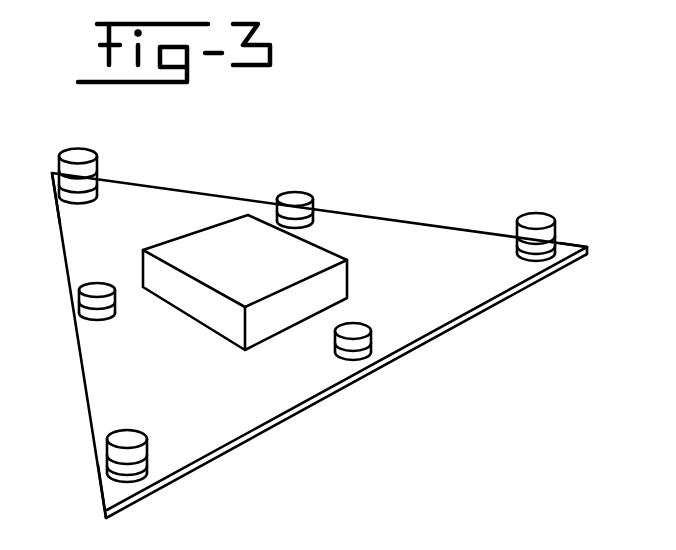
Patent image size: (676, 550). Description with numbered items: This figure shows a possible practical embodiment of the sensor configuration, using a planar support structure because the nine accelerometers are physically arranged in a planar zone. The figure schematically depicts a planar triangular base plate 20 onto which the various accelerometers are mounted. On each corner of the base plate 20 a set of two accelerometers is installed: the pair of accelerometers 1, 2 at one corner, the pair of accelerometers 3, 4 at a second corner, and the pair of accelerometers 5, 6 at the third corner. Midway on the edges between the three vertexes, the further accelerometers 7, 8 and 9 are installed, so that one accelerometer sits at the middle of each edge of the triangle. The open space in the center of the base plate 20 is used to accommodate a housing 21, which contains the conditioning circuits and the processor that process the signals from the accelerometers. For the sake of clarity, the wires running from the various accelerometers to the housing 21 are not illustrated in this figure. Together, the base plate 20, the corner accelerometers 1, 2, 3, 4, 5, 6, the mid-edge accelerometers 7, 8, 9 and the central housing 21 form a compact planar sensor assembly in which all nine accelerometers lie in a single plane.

The accelerometer 1 is at (100, 478).
The accelerometer 2 is at (107, 456).
The accelerometer 3 is at (556, 243).
The accelerometer 4 is at (538, 220).
The accelerometer 5 is at (56, 194).
The accelerometer 6 is at (78, 155).
The accelerometer 7 is at (76, 307).
The accelerometer 8 is at (302, 201).
The accelerometer 9 is at (357, 351).
The base plate 20 is at (455, 301).
The housing 21 is at (178, 246).